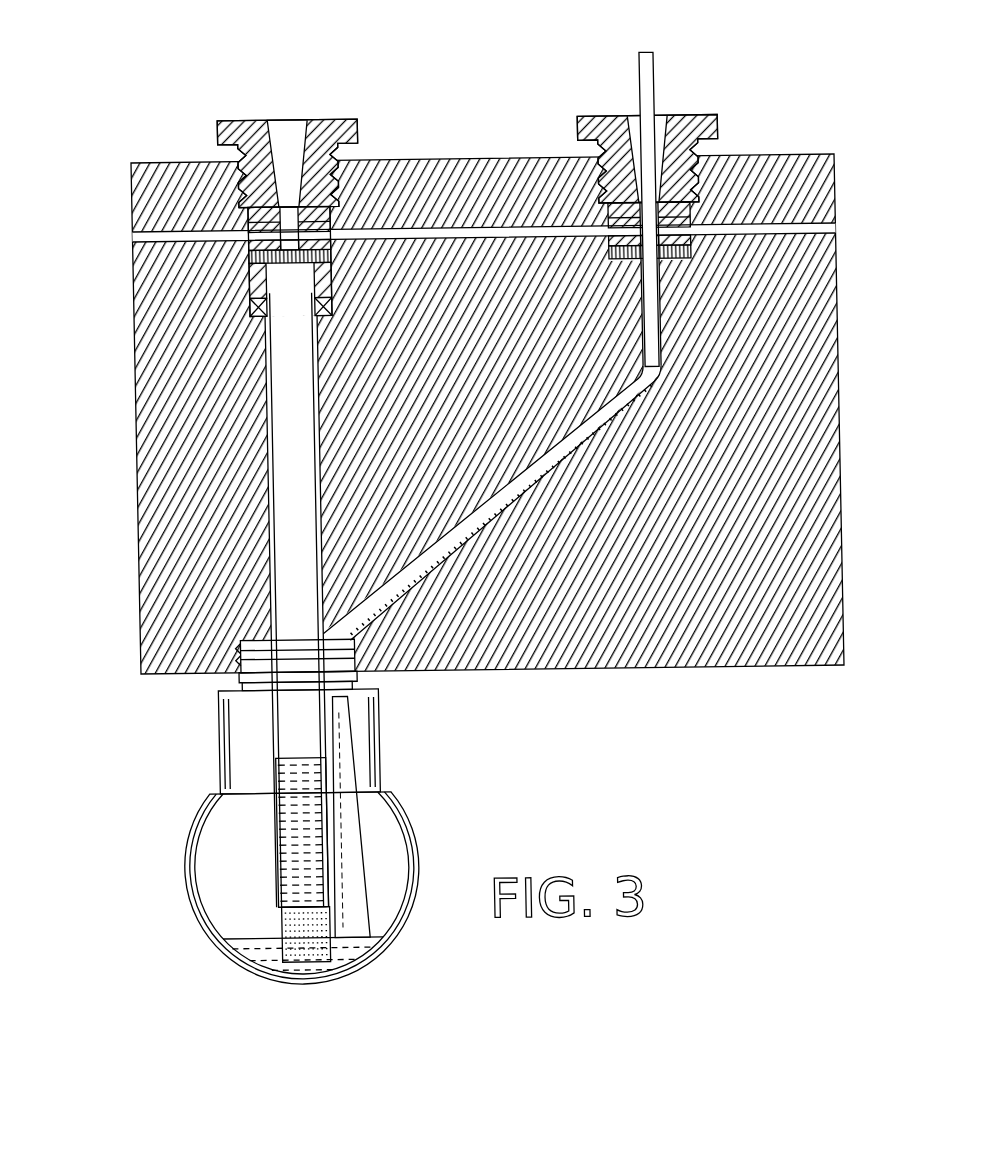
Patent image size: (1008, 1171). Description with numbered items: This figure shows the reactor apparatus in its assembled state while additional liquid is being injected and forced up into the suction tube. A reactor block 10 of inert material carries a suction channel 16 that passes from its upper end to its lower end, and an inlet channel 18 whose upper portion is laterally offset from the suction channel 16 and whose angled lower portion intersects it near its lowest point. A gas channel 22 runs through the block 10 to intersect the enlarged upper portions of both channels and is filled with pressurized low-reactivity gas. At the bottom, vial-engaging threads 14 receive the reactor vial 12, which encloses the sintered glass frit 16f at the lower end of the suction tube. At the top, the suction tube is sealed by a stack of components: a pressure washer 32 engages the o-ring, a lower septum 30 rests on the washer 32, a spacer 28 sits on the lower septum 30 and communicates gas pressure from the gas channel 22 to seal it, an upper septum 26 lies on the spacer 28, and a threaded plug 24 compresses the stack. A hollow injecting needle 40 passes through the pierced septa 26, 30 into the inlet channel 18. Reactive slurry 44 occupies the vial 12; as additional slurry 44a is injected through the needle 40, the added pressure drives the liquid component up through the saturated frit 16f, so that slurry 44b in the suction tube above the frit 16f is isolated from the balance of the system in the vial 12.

The reactor block 10 is at (130, 487).
The reactor vial 12 is at (369, 841).
The vial-engaging threads 14 is at (340, 666).
The suction channel 16 is at (264, 349).
The filtration medium 16f is at (266, 905).
The inlet channel 18 is at (446, 541).
The gas channel 22 is at (832, 237).
The plug 24 is at (334, 122).
The upper septum 26 is at (247, 215).
The spacer 28 is at (247, 223).
The lower septum 30 is at (248, 258).
The pressure washer 32 is at (247, 298).
The hollow injecting needle 40 is at (637, 78).
The reactive slurry 44 is at (340, 950).
The additional slurry 44a is at (527, 485).
The chemical materials slurry 44b is at (267, 830).